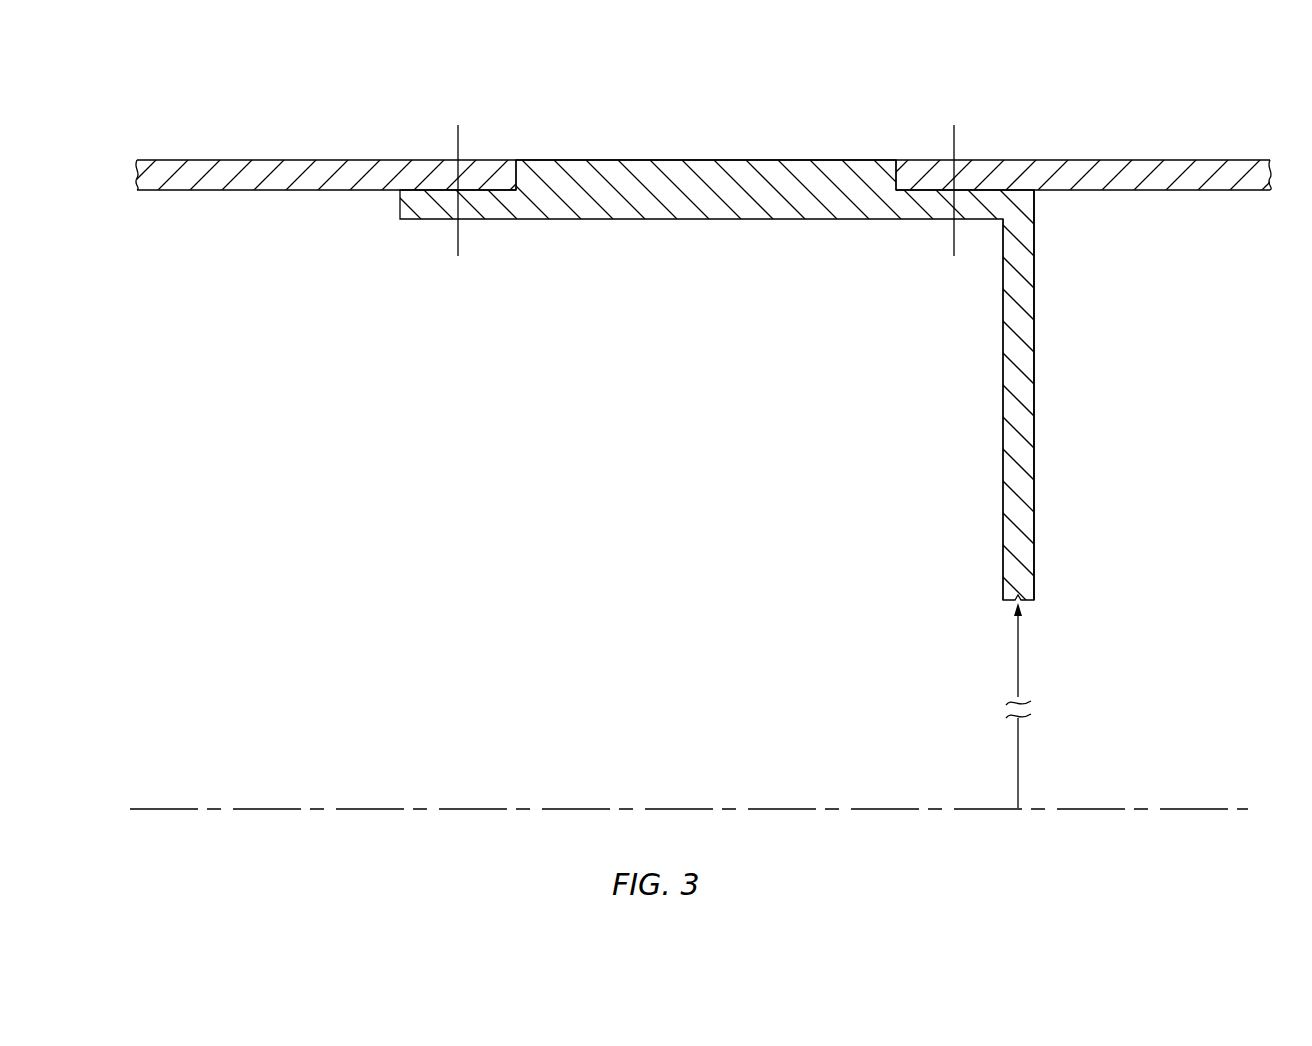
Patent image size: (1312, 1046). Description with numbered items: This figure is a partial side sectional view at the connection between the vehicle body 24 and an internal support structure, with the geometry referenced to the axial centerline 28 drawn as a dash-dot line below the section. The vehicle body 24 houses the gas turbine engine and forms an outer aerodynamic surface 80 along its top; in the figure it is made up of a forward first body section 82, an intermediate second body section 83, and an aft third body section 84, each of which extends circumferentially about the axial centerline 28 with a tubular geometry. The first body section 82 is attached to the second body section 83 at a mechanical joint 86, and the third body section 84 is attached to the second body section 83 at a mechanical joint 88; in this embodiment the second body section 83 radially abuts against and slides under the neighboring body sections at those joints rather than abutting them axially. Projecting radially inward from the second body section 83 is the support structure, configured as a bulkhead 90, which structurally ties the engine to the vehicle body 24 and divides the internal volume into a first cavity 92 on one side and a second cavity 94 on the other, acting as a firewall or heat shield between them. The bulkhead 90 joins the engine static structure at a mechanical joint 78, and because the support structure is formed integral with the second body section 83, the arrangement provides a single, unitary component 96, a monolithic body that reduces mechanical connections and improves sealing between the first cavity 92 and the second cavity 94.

The vehicle body 24 is at (118, 95).
The axial centerline 28 is at (1232, 808).
The mechanical joint 78 is at (958, 501).
The outer aerodynamic surface 80 is at (730, 158).
The first body section 82 is at (314, 150).
The second body section 83 is at (634, 148).
The third body section 84 is at (1142, 148).
The mechanical joint 86 is at (522, 135).
The mechanical joint 88 is at (899, 136).
The bulkhead 90 is at (938, 395).
The first cavity 92 is at (725, 427).
The second cavity 94 is at (1205, 333).
The unitary component 96 is at (1090, 395).